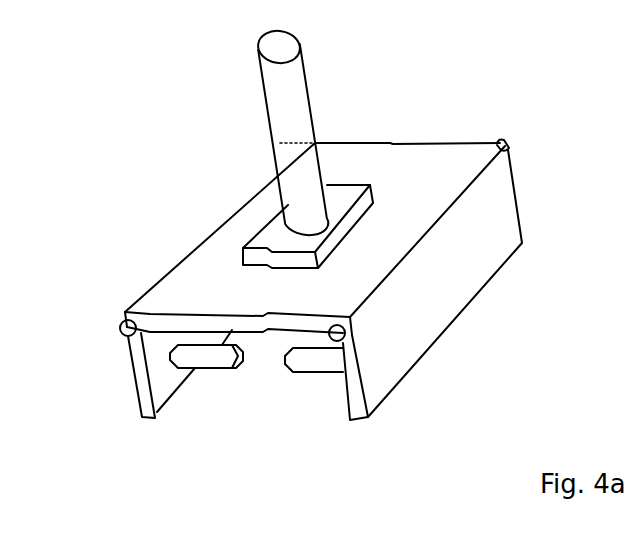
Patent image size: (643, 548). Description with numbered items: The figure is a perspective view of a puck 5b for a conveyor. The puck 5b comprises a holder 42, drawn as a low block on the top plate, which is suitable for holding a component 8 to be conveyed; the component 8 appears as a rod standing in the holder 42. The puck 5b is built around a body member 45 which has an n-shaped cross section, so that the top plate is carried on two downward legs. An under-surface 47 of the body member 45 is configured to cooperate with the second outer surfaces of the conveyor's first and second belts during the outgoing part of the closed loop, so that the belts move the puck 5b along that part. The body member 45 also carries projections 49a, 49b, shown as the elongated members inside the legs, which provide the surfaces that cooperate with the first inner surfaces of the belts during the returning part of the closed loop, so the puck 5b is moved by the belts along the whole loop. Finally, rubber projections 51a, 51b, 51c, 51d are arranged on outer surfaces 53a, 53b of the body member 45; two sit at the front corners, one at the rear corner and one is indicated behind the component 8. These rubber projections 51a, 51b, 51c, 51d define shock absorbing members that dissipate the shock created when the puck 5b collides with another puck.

The puck 5b is at (447, 123).
The component 8 is at (273, 78).
The holder 42 is at (360, 210).
The body member 45 is at (353, 392).
The under-surface 47 is at (266, 328).
The projection 49a is at (208, 360).
The projection 49b is at (323, 362).
The rubber projection 51a is at (122, 334).
The rubber projection 51b is at (355, 332).
The rubber projection 51c is at (512, 140).
The rubber projection 51d is at (295, 137).
The outer surface 53a is at (135, 387).
The outer surface 53b is at (393, 143).